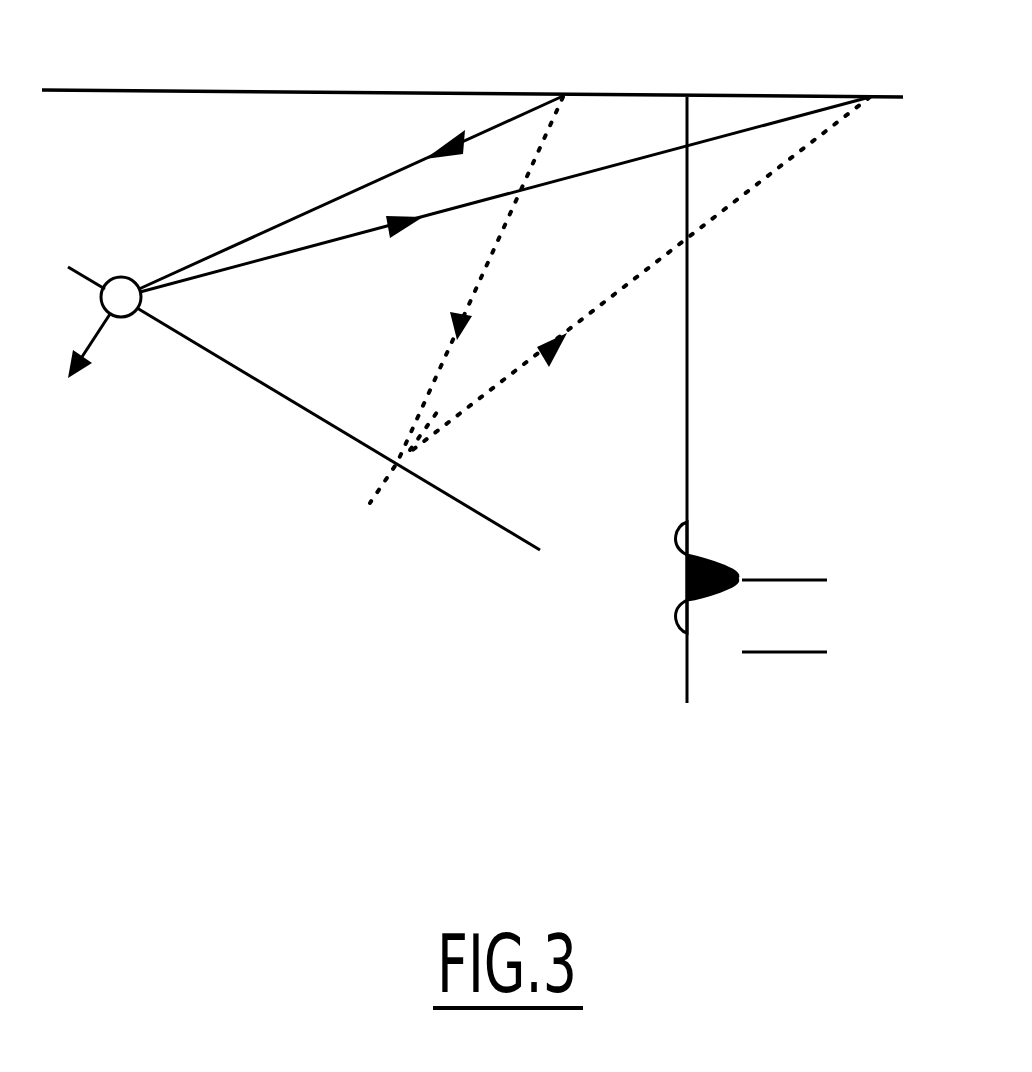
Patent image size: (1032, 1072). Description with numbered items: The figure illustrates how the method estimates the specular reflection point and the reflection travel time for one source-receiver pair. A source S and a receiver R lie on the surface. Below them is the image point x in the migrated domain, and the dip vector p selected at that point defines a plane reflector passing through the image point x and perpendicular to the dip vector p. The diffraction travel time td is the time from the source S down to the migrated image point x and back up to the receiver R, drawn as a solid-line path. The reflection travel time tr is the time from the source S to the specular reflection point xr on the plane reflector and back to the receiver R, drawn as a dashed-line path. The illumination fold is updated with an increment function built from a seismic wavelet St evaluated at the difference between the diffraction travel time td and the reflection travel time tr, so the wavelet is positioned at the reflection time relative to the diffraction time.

The source S is at (358, 165).
The receiver R is at (518, 166).
The image point x is at (134, 211).
The dip vector p is at (64, 394).
The specular reflection point xr is at (392, 372).
The diffraction travel time td is at (247, 192).
The reflection travel time tr is at (753, 481).
The seismic wavelet St is at (751, 603).